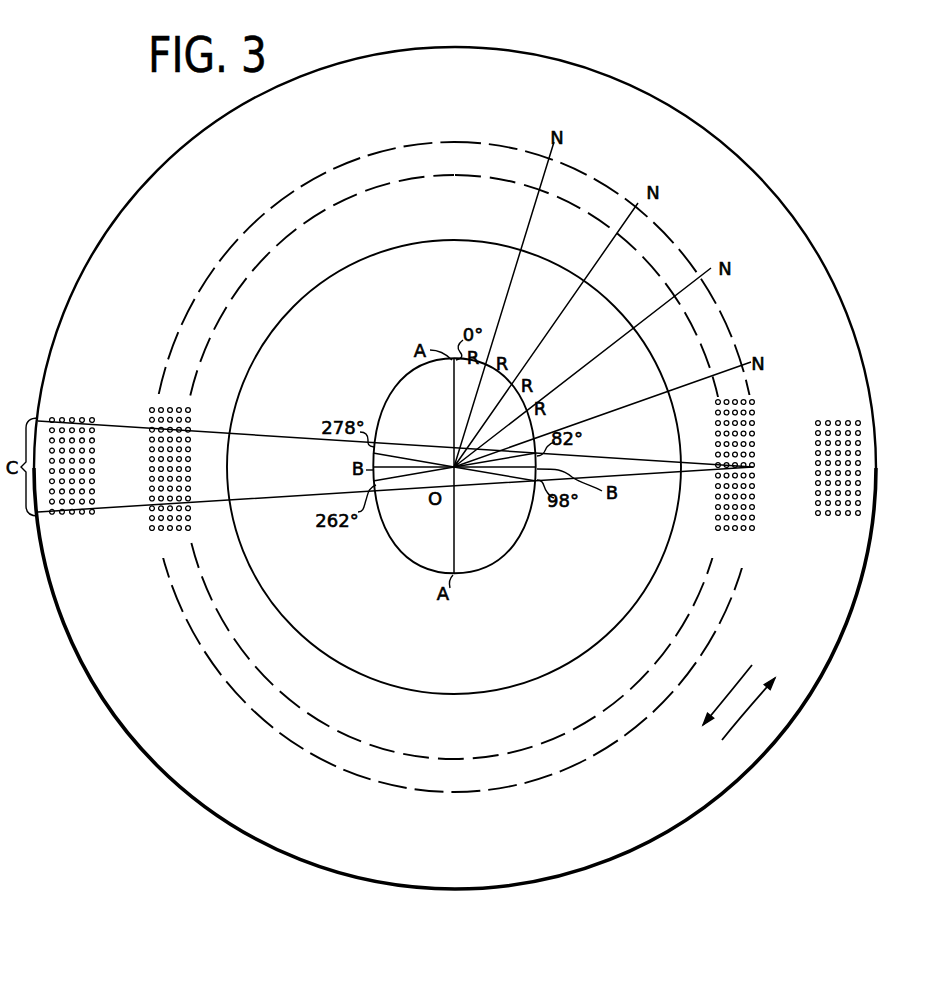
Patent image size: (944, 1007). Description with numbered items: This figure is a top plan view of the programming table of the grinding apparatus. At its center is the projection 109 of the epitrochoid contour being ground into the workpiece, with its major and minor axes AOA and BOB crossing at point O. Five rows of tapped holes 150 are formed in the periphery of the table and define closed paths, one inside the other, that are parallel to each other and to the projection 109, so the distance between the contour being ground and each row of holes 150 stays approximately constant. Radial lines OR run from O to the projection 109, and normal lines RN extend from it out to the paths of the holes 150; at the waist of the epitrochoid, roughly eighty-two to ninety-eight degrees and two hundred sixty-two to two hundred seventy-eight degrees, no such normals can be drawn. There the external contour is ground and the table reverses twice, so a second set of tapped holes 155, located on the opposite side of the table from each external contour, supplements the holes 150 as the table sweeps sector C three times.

The projection 109 is at (486, 576).
The tapped holes 150 is at (182, 528).
The second set of tapped holes 155 is at (82, 420).